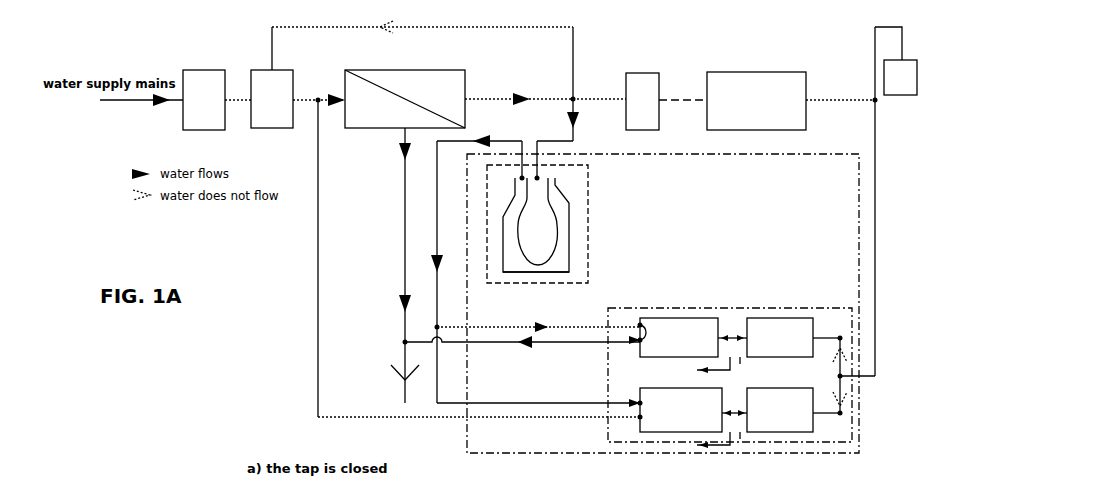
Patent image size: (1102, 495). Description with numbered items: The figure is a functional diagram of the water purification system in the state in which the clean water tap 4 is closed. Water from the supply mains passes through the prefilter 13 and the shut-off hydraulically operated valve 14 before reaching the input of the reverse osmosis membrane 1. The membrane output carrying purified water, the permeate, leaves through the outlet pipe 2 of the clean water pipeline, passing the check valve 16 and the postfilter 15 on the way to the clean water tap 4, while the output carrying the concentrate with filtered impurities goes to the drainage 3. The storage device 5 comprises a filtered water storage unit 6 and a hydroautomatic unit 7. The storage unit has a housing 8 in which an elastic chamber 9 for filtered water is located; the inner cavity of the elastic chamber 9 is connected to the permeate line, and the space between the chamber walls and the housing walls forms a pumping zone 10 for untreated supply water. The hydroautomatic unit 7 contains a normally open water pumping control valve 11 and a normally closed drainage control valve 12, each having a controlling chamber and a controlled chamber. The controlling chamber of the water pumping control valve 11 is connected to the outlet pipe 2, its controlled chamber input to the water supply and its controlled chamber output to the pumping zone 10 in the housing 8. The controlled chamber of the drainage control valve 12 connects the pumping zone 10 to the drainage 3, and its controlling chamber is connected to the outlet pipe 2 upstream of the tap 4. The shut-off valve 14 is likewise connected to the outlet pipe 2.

The reverse osmosis membrane 1 is at (405, 99).
The outlet pipe 2 is at (488, 97).
The drainage 3 is at (402, 185).
The clean water tap 4 is at (900, 77).
The storage device 5 is at (663, 303).
The filtered water storage unit 6 is at (537, 224).
The hydroautomatic unit 7 is at (730, 375).
The housing 8 is at (562, 202).
The elastic chamber 9 is at (556, 225).
The pumping zone 10 is at (560, 258).
The water pumping control valve 11 is at (683, 431).
The drainage control valve 12 is at (672, 316).
The prefilter 13 is at (204, 100).
The shut-off hydraulically operated valve 14 is at (272, 99).
The postfilter 15 is at (756, 101).
The check valve 16 is at (642, 101).